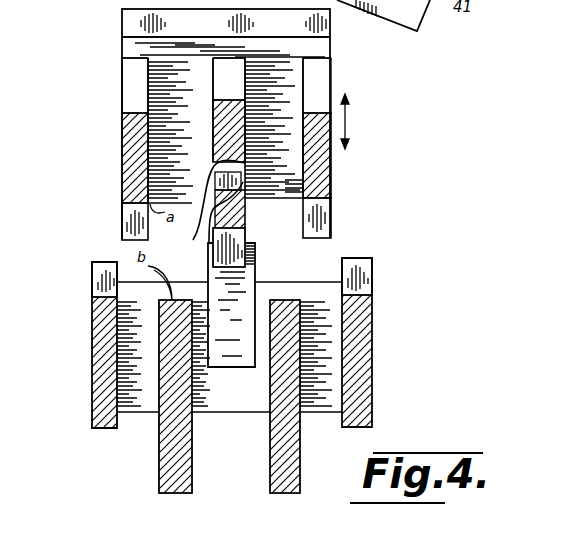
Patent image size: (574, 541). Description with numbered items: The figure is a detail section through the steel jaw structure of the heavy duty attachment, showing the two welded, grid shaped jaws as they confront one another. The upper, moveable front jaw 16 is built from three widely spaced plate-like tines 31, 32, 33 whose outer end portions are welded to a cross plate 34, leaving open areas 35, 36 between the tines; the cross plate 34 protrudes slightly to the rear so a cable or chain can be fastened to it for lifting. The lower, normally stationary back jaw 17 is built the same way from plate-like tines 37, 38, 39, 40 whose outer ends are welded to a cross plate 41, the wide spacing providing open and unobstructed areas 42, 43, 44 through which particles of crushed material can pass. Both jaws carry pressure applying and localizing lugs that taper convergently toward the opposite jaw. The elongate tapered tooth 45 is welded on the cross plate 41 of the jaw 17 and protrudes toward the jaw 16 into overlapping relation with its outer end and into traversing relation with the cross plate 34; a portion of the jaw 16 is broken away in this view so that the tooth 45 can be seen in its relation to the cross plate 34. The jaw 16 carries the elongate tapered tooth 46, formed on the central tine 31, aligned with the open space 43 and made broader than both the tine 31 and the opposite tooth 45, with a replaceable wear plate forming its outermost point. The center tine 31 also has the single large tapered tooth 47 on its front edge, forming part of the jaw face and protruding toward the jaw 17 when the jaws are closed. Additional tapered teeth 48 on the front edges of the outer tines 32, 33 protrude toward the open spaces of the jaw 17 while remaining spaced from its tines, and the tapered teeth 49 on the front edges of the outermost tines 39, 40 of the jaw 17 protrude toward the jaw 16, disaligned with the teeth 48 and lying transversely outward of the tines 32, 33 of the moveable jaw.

The jaw 16 is at (122, 48).
The jaw 17 is at (92, 397).
The plate-like tine 31 is at (130, 112).
The plate-like tine 32 is at (126, 126).
The plate-like tine 33 is at (318, 170).
The cross plate 34 is at (282, 96).
The open area 35 is at (126, 160).
The open area 36 is at (283, 182).
The plate-like tine 37 is at (170, 461).
The plate-like tine 38 is at (280, 467).
The plate-like tine 39 is at (96, 340).
The plate-like tine 40 is at (355, 345).
The cross plate 41 is at (317, 308).
The open area 42 is at (113, 303).
The open area 43 is at (243, 395).
The open area 44 is at (328, 392).
The tooth 45 is at (203, 220).
The tooth 46 is at (240, 288).
The tooth 47 is at (228, 244).
The tooth 48 is at (126, 214).
The tooth 49 is at (103, 272).